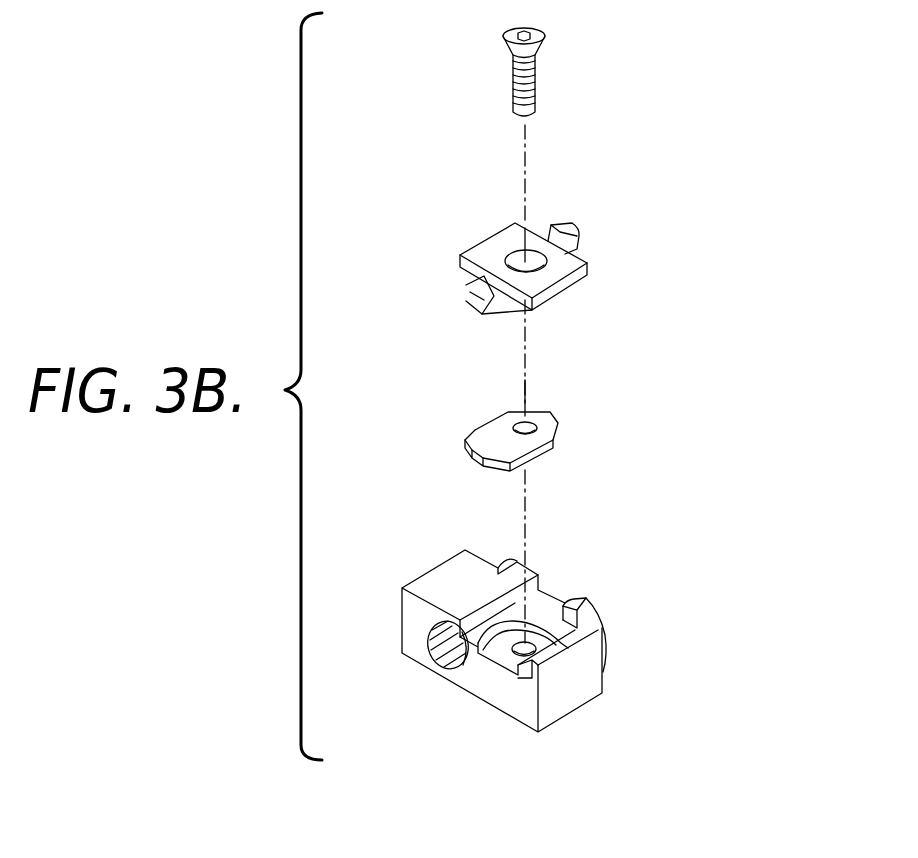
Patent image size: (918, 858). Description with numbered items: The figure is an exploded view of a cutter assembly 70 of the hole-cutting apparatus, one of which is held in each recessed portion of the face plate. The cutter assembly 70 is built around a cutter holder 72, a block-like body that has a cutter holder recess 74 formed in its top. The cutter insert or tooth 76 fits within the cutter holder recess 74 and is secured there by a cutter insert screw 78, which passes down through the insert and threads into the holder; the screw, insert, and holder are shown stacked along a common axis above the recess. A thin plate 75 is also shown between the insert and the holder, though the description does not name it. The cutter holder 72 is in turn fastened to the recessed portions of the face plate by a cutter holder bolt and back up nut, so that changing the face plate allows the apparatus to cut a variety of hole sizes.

The cutter assembly 70 is at (758, 753).
The cutter holder 72 is at (558, 702).
The cutter holder recess 74 is at (500, 653).
The shim 75 is at (547, 450).
The cutter insert or tooth 76 is at (550, 273).
The cutter insert screw 78 is at (541, 39).